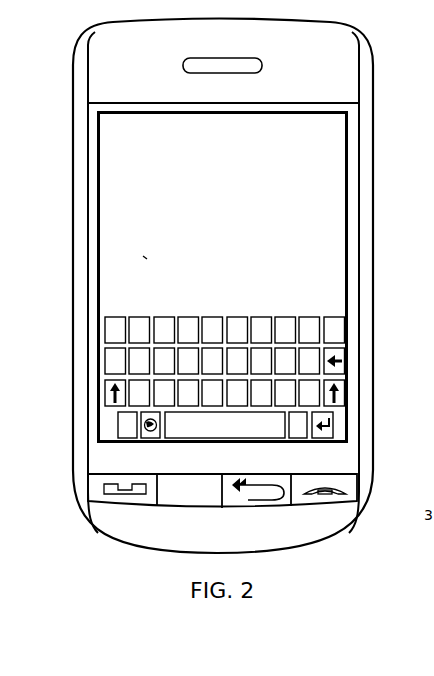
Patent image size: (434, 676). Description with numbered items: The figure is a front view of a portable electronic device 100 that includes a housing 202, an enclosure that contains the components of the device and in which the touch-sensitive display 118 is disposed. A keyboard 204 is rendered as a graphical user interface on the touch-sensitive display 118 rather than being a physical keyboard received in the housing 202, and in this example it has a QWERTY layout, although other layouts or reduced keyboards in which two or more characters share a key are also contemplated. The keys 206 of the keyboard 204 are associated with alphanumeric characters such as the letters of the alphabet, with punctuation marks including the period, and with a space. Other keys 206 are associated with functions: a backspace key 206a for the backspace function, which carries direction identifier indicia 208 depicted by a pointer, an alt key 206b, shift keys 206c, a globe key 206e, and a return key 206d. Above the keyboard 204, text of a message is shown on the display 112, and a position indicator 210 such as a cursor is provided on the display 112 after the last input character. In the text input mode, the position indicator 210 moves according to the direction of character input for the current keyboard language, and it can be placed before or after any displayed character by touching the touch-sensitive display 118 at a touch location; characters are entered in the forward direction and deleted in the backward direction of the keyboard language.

The portable electronic device 100 is at (222, 300).
The display 112 is at (110, 183).
The touch-sensitive display 118 is at (333, 263).
The housing 202 is at (367, 178).
The keyboard 204 is at (222, 430).
The keys 206 is at (343, 327).
The backspace key 206a is at (375, 360).
The alt key 206b is at (125, 440).
The shift keys 206c is at (105, 395).
The return key 206d is at (337, 428).
The globe key 206e is at (153, 440).
The direction identifier indicia 208 is at (336, 363).
The position indicator 210 is at (147, 259).